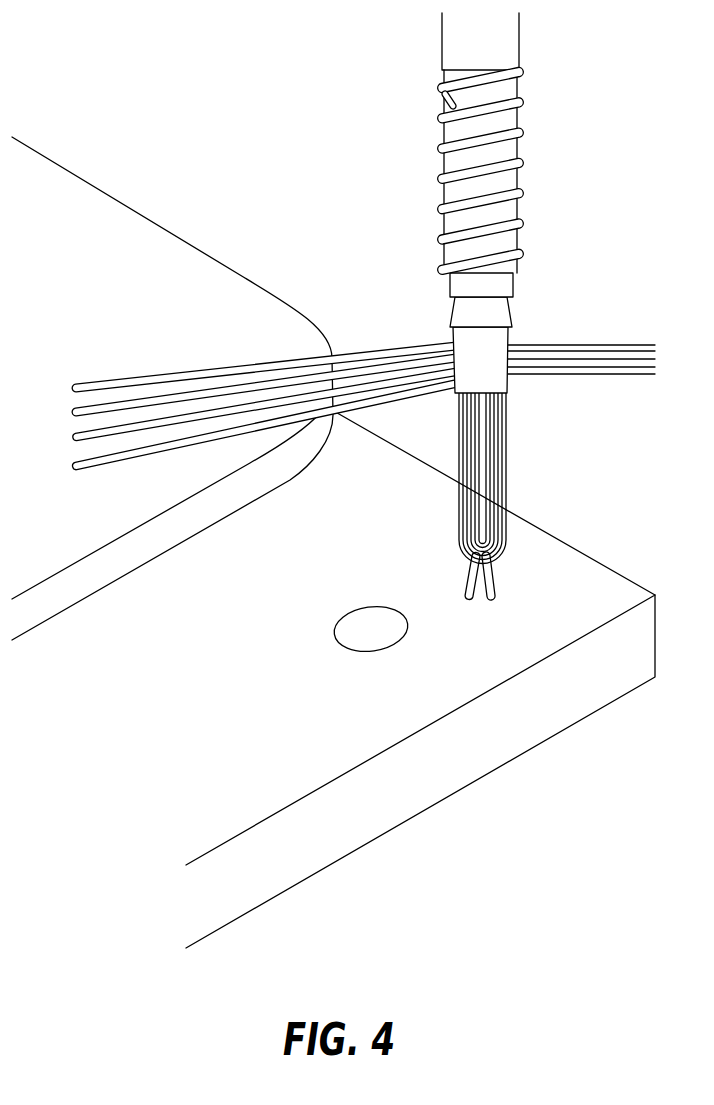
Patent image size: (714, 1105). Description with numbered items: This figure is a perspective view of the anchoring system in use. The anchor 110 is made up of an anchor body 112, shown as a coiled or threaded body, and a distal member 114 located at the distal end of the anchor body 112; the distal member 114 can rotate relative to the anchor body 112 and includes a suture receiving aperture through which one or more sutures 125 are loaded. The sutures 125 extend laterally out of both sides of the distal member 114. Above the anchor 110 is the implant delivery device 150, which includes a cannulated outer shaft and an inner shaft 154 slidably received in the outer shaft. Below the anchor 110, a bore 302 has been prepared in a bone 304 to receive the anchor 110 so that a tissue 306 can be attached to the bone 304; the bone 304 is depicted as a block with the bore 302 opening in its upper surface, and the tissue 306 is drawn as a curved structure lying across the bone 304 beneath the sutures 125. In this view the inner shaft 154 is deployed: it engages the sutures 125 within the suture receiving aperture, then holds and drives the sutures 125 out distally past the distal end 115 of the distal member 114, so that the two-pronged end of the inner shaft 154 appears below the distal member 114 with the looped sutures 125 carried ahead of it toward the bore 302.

The anchor 110 is at (538, 180).
The anchor body 112 is at (440, 92).
The distal member 114 is at (483, 372).
The distal end of the distal member 115 is at (466, 414).
The suture 125 is at (593, 360).
The implant delivery device 150 is at (503, 44).
The inner shaft 154 is at (498, 583).
The bore 302 is at (353, 634).
The bone 304 is at (595, 578).
The tissue 306 is at (205, 263).